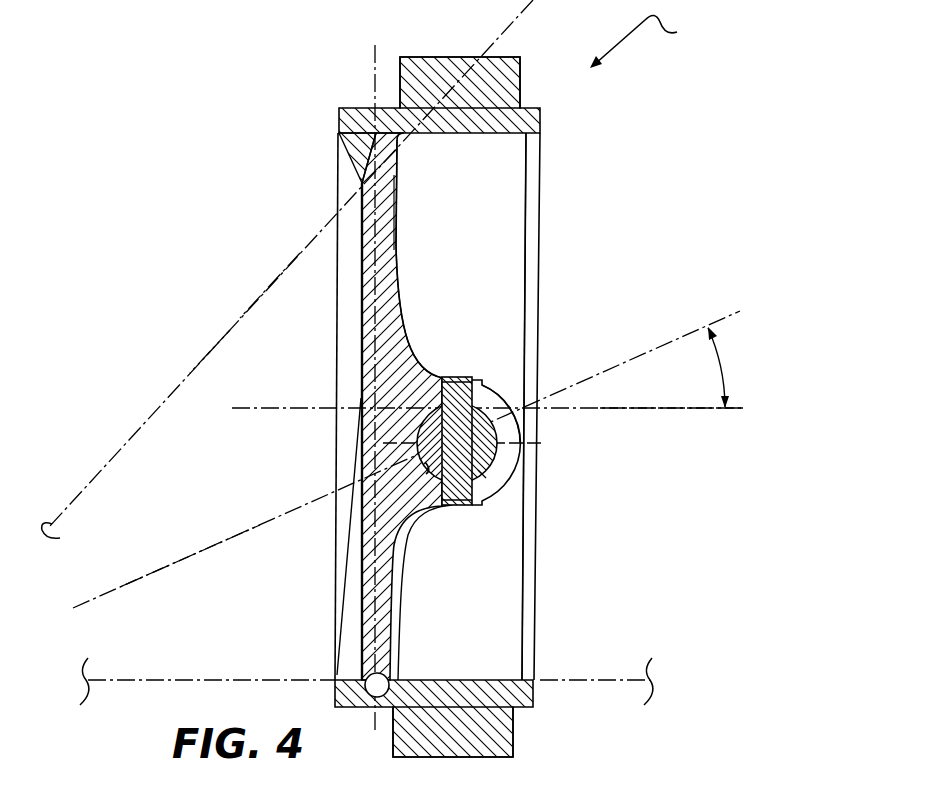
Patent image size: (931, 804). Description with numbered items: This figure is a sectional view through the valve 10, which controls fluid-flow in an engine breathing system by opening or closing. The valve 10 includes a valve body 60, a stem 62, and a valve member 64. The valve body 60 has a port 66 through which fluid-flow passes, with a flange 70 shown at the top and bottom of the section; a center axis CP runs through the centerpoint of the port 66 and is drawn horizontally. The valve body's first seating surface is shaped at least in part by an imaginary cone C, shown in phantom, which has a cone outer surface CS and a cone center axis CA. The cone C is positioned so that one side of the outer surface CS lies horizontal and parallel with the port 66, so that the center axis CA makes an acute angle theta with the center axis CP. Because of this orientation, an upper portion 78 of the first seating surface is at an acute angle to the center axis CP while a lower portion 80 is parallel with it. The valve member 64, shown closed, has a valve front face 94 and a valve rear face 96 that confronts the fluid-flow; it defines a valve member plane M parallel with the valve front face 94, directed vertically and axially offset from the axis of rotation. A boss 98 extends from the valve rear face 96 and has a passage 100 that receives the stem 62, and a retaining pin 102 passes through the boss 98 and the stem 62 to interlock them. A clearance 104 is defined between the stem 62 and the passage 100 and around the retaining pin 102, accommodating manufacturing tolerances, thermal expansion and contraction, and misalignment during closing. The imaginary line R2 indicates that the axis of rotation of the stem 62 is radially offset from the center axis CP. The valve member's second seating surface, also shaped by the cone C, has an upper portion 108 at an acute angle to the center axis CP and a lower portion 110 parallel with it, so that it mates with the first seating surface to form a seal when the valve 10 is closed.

The valve 10 is at (646, 41).
The valve body 60 is at (500, 57).
The stem 62 is at (480, 418).
The valve member 64 is at (398, 288).
The port 66 is at (482, 136).
The flange 70 is at (425, 72).
The upper portion of the first seating surface 78 is at (374, 169).
The lower portion of the first seating surface 80 is at (366, 673).
The valve front face 94 is at (362, 318).
The valve rear face 96 is at (396, 308).
The boss 98 is at (498, 478).
The passage 100 is at (481, 470).
The retaining pin 102 is at (456, 506).
The clearance 104 is at (435, 473).
The upper portion of the second seating surface 108 is at (360, 180).
The lower portion of the second seating surface 110 is at (385, 678).
The valve member plane M is at (378, 383).
The imaginary cone C is at (188, 360).
The cone outer surface CS is at (266, 290).
The cone center axis CA is at (177, 561).
The center axis of the port CP is at (642, 409).
The imaginary line R2 is at (530, 446).
The acute angle theta is at (724, 367).